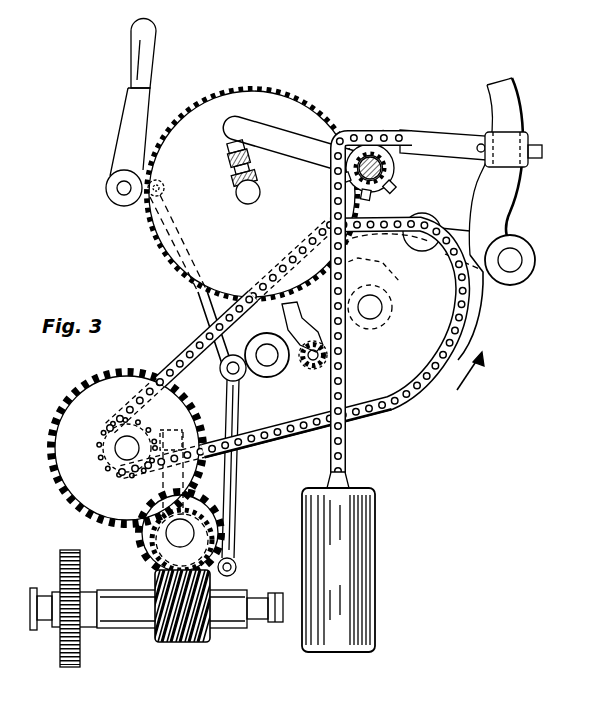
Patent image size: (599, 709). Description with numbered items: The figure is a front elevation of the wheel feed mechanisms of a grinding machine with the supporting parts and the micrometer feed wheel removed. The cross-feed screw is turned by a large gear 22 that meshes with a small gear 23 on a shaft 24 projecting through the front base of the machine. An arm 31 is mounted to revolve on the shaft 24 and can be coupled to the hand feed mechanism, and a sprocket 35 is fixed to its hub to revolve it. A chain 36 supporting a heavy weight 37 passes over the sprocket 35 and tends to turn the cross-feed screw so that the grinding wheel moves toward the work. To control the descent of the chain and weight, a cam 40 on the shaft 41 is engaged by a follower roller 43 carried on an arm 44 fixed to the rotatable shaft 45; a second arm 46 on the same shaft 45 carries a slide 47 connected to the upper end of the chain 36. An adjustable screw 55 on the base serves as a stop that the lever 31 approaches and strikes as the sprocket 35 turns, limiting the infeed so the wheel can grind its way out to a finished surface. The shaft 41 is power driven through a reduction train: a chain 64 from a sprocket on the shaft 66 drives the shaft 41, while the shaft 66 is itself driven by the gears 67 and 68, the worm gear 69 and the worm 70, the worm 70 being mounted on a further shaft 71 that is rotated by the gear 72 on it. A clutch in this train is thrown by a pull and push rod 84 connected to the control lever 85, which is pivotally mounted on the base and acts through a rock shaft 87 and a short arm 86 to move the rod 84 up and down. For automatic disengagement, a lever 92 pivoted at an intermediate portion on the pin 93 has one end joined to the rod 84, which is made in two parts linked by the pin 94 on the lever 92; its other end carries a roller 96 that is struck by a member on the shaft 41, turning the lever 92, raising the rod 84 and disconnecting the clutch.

The large gear 22 is at (215, 100).
The small gear 23 is at (362, 155).
The shaft 24 is at (381, 168).
The arm 31 is at (300, 142).
The sprocket 35 is at (393, 376).
The chain 36 is at (348, 440).
The weight 37 is at (352, 532).
The cam 40 is at (476, 305).
The shaft 41 is at (376, 312).
The follower roller 43 is at (427, 222).
The arm 44 is at (459, 227).
The rotatable shaft 45 is at (512, 260).
The second arm 46 is at (512, 112).
The slide 47 is at (530, 162).
The adjustable screw 55 is at (236, 190).
The chain 64 is at (173, 369).
The shaft 66 is at (112, 430).
The gear 67 is at (68, 408).
The gear 68 is at (135, 544).
The worm gear 69 is at (150, 556).
The worm 70 is at (166, 636).
The shaft 71 is at (110, 614).
The gear 72 is at (80, 660).
The pull and push rod 84 is at (198, 295).
The control lever 85 is at (135, 58).
The short arm 86 is at (142, 212).
The rock shaft 87 is at (120, 187).
The lever 92 is at (312, 369).
The pin 93 is at (268, 362).
The pin 94 is at (222, 375).
The roller 96 is at (284, 332).